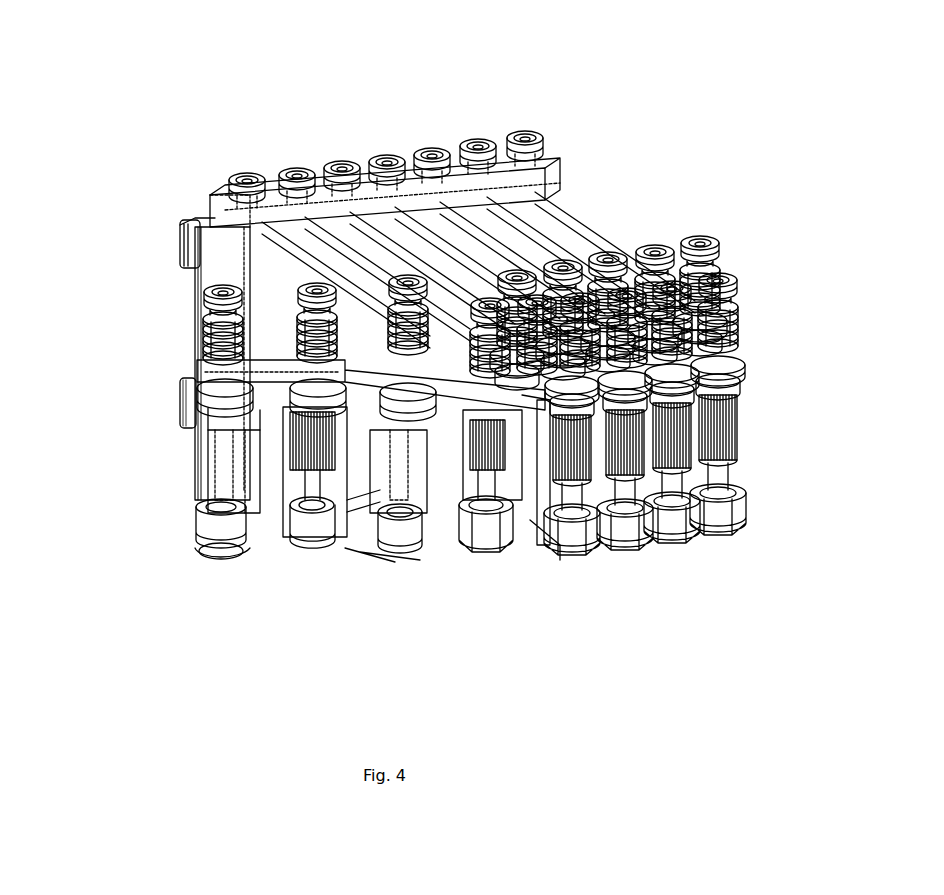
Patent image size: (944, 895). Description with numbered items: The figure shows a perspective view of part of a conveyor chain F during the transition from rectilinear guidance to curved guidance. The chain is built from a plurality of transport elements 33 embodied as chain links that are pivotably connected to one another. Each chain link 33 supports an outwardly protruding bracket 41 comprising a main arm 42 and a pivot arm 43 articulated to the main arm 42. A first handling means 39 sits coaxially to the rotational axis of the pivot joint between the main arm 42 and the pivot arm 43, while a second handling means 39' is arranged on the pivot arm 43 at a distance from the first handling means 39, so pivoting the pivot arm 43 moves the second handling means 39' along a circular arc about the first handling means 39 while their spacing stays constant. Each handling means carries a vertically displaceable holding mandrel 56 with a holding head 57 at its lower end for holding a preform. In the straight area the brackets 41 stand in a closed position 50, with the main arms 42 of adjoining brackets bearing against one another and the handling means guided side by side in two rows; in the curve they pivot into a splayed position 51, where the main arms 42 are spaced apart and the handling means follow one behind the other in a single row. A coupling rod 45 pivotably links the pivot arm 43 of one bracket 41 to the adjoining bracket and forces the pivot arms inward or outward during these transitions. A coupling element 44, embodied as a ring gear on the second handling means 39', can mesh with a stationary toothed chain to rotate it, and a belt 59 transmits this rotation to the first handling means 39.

The transport element 33 is at (220, 188).
The first handling means 39 is at (282, 209).
The second handling means 39' is at (379, 207).
The bracket 41 is at (118, 327).
The main arm 42 is at (212, 262).
The pivot arm 43 is at (270, 545).
The coupling element 44 is at (415, 535).
The coupling rod 45 is at (355, 545).
The closed position 50 is at (652, 615).
The splayed position 51 is at (285, 636).
The holding mandrel 56 is at (195, 487).
The holding head 57 is at (200, 555).
The belt 59 is at (195, 428).
The conveyor chain F is at (548, 68).